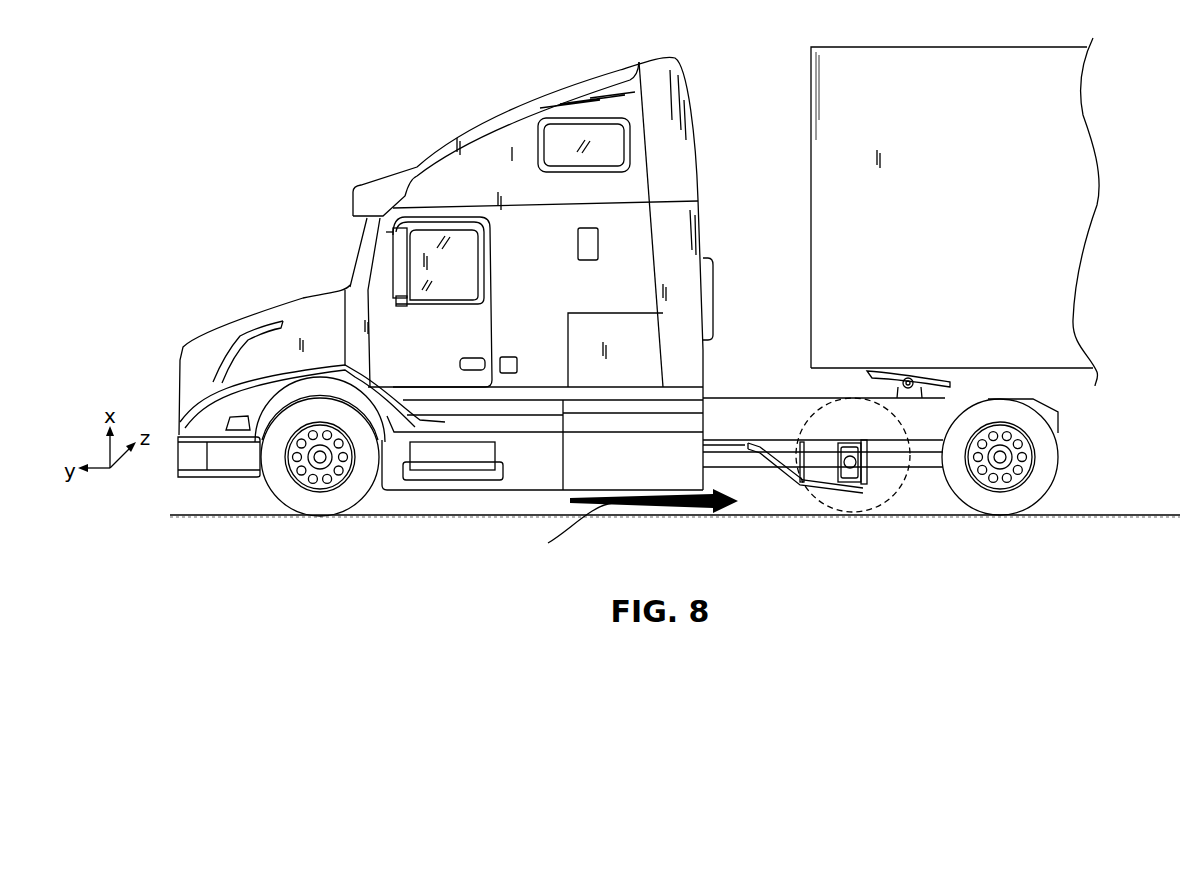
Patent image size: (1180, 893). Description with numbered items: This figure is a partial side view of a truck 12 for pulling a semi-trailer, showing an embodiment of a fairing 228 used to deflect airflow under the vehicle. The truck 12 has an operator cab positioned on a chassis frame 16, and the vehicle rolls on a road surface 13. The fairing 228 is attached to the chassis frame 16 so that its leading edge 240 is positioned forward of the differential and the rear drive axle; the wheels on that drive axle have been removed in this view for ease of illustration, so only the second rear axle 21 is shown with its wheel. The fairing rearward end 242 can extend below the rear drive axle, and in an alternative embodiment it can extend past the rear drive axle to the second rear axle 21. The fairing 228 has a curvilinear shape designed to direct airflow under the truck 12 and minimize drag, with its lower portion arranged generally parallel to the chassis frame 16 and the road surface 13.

The truck 12 is at (276, 180).
The road surface 13 is at (1080, 515).
The chassis frame 16 is at (777, 415).
The second rear axle 21 is at (1004, 456).
The leading edge 240 is at (748, 447).
The fairing 228 is at (802, 485).
The fairing rearward end 242 is at (866, 487).